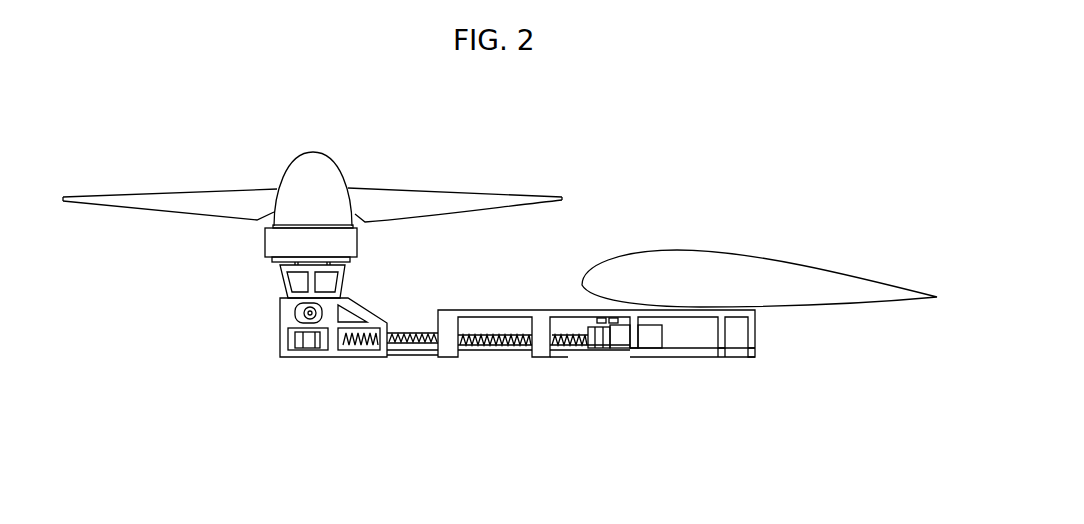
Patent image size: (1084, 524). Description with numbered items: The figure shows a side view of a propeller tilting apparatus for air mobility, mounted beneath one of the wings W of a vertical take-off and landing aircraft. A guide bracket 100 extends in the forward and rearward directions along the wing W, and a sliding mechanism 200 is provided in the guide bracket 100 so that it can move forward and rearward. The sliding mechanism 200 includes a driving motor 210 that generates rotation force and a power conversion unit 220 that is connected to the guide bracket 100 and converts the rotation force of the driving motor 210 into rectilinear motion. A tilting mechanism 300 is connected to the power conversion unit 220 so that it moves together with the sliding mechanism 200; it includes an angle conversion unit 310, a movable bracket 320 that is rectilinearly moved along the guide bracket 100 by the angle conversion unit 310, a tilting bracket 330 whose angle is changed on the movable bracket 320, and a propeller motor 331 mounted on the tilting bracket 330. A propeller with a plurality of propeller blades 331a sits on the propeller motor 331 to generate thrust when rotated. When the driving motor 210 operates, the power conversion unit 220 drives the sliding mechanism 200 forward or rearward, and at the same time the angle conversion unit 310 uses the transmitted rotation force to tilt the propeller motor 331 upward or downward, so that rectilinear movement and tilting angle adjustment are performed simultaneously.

The guide bracket 100 is at (542, 318).
The sliding mechanism 200 is at (642, 442).
The driving motor 210 is at (652, 338).
The power conversion unit 220 is at (495, 342).
The tilting mechanism 300 is at (200, 425).
The angle conversion unit 310 is at (310, 340).
The movable bracket 320 is at (277, 322).
The tilting bracket 330 is at (277, 277).
The propeller motor 331 is at (268, 240).
The propeller blades 331a is at (232, 197).
The wings W is at (723, 265).